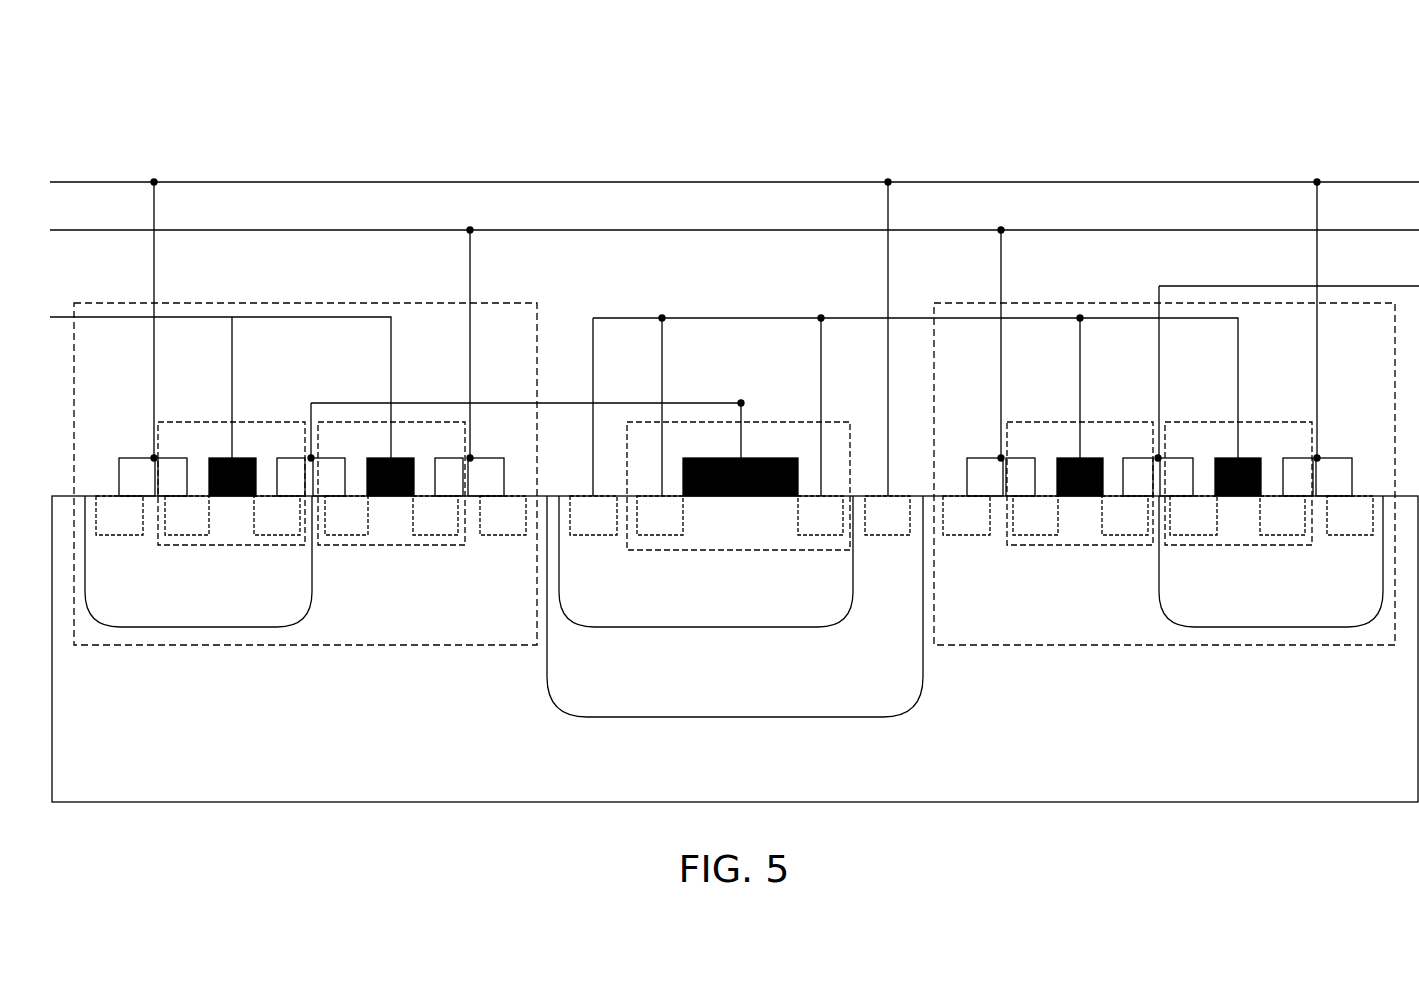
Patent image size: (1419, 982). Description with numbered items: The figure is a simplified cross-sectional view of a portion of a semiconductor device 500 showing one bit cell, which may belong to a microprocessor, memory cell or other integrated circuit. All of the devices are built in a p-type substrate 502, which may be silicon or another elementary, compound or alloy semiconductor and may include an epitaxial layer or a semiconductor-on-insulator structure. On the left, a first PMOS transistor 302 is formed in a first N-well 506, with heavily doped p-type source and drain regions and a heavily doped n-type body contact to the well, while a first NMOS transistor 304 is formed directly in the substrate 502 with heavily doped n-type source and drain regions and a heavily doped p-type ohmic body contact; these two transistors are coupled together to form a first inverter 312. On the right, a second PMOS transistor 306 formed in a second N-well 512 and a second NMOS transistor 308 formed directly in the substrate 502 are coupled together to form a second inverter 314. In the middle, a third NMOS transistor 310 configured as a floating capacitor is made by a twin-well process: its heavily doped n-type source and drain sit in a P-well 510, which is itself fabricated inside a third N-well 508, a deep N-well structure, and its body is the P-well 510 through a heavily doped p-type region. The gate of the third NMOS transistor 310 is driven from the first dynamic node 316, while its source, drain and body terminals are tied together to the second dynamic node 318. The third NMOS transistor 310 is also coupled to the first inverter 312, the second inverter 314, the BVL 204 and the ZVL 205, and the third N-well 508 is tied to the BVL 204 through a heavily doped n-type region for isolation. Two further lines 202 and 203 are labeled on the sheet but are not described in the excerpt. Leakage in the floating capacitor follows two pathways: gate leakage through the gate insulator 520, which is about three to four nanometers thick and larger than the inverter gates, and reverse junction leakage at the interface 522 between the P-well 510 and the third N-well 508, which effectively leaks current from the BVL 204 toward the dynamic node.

The semiconductor device 500 is at (89, 114).
The BVL 204 is at (733, 326).
The ZVL 205 is at (733, 330).
The first input signal line 202 is at (75, 316).
The second input signal line 203 is at (1289, 358).
The first PMOS transistor 302 is at (282, 421).
The first NMOS transistor 304 is at (345, 421).
The second PMOS transistor 306 is at (1197, 421).
The second NMOS transistor 308 is at (1040, 421).
The third NMOS transistor 310 is at (740, 450).
The first inverter 312 is at (468, 648).
The second inverter 314 is at (1330, 648).
The first dynamic node 316 is at (745, 404).
The second dynamic node 318 is at (818, 320).
The substrate 502 is at (1253, 748).
The first N-well 506 is at (180, 582).
The third N-well 508 is at (698, 669).
The P-well 510 is at (706, 589).
The second N-well 512 is at (1253, 582).
The gate insulator 520 is at (750, 498).
The interface 522 is at (808, 628).